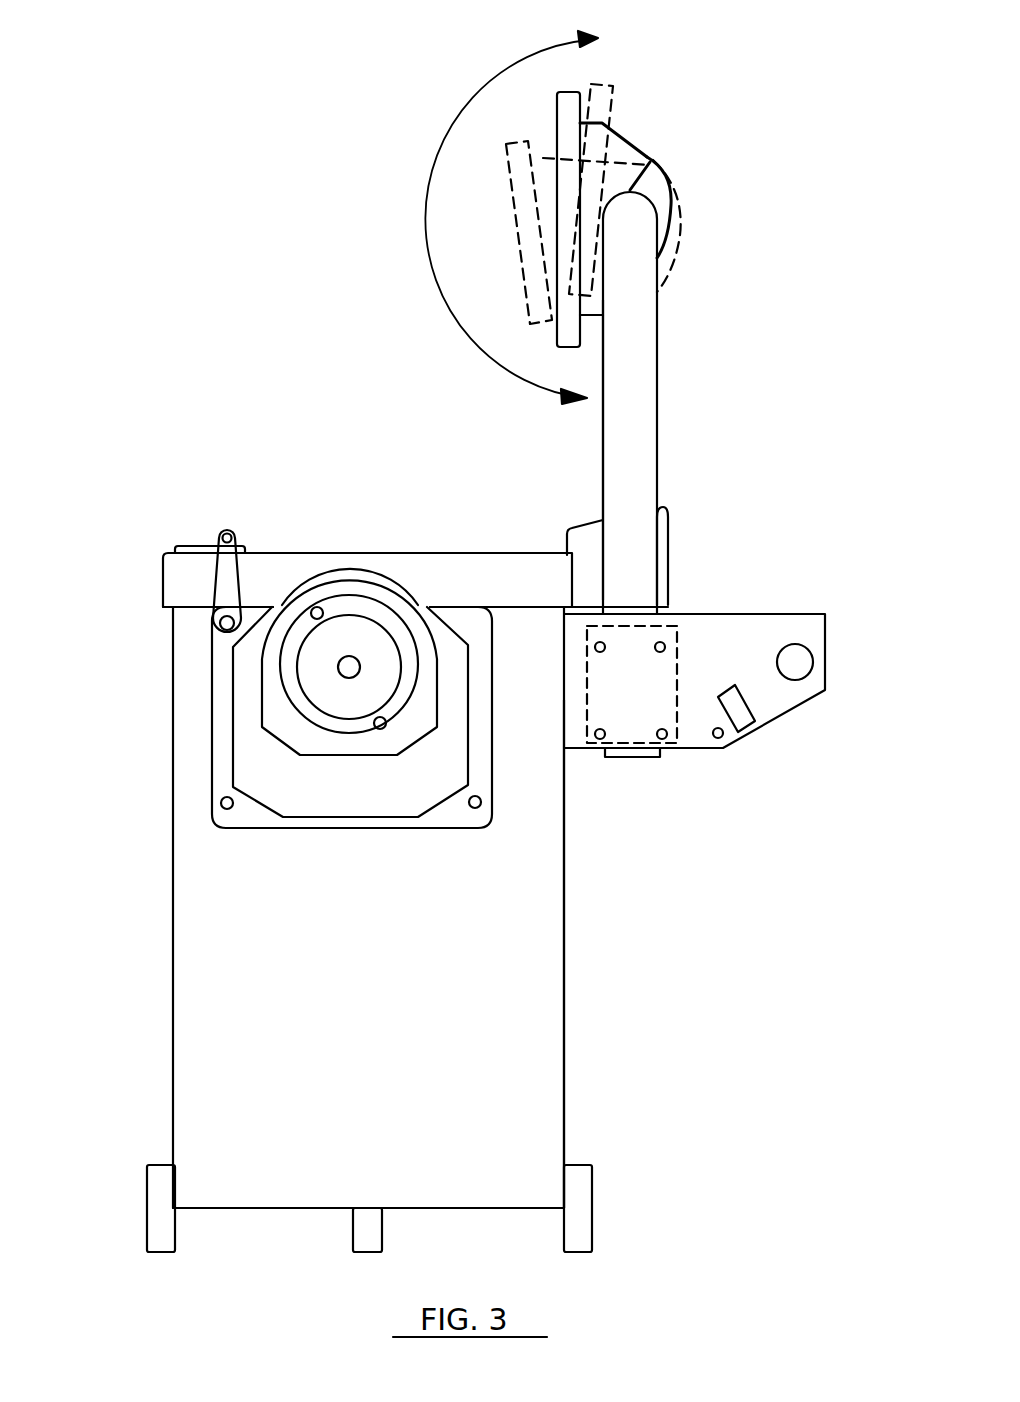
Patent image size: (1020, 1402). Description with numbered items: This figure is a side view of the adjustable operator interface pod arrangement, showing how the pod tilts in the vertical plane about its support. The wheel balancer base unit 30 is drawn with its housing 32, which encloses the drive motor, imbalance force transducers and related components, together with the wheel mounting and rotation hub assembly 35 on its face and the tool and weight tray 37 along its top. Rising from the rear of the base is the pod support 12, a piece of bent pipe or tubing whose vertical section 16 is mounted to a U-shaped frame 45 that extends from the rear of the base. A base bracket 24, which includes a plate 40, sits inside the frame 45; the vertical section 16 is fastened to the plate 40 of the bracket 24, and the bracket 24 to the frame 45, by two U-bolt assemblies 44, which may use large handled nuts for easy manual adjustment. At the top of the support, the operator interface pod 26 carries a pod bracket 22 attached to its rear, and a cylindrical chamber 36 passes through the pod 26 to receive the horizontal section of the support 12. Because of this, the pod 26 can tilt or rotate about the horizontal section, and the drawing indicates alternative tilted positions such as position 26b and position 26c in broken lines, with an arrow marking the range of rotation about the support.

The pod support 12 is at (661, 360).
The vertical section 16 is at (637, 467).
The pod bracket 22 is at (665, 195).
The base bracket 24 is at (662, 738).
The operator interface pod 26 is at (573, 90).
The pod position 26b is at (607, 80).
The bar in third position 26c is at (518, 138).
The wheel balancer base unit 30 is at (565, 940).
The housing 32 is at (532, 1060).
The wheel mounting and rotation hub assembly 35 is at (313, 690).
The cylindrical chamber 36 is at (647, 162).
The tool and weight tray 37 is at (178, 573).
The plate 40 is at (667, 705).
The U-bolt assemblies 44 is at (660, 647).
The U-shaped frame 45 is at (768, 640).